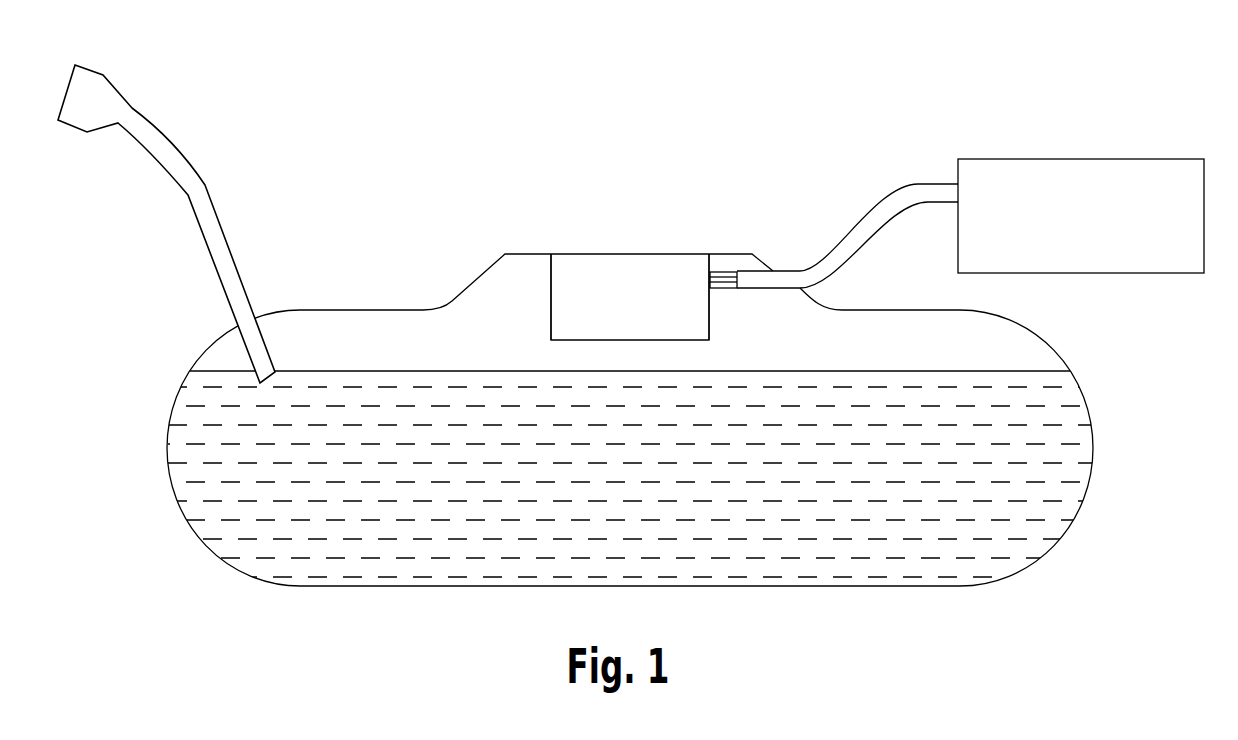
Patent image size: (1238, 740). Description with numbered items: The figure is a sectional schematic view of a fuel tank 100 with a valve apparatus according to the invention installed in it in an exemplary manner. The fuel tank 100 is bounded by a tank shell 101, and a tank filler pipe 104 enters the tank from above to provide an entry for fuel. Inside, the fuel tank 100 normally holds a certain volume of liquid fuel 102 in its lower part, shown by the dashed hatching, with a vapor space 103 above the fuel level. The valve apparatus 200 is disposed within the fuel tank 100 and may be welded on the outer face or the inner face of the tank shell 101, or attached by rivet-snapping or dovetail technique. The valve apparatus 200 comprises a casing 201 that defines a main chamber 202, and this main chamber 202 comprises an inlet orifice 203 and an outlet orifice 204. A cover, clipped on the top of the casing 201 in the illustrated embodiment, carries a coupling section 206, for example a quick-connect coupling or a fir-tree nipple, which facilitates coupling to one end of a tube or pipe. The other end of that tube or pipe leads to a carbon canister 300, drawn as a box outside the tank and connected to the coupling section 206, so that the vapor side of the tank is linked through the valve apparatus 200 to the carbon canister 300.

The fuel tank 100 is at (631, 339).
The tank shell 101 is at (392, 315).
The liquid fuel 102 is at (238, 522).
The vapor space 103 is at (1002, 348).
The tank filler pipe 104 is at (163, 133).
The valve apparatus 200 is at (608, 225).
The casing 201 is at (550, 308).
The main chamber 202 is at (602, 283).
The inlet orifice 203 is at (628, 333).
The outlet orifice 204 is at (698, 282).
The coupling section 206 is at (728, 292).
The carbon canister 300 is at (970, 223).